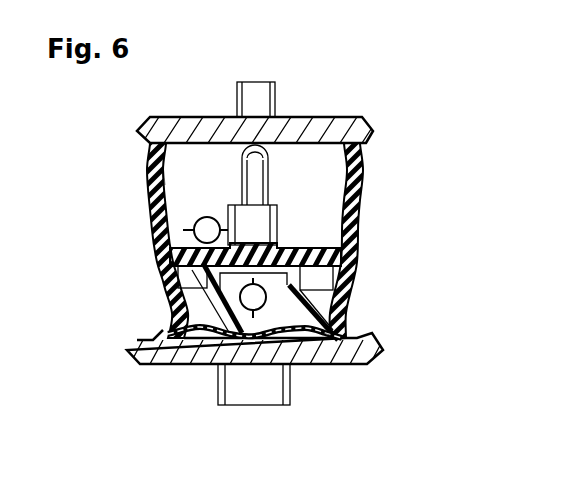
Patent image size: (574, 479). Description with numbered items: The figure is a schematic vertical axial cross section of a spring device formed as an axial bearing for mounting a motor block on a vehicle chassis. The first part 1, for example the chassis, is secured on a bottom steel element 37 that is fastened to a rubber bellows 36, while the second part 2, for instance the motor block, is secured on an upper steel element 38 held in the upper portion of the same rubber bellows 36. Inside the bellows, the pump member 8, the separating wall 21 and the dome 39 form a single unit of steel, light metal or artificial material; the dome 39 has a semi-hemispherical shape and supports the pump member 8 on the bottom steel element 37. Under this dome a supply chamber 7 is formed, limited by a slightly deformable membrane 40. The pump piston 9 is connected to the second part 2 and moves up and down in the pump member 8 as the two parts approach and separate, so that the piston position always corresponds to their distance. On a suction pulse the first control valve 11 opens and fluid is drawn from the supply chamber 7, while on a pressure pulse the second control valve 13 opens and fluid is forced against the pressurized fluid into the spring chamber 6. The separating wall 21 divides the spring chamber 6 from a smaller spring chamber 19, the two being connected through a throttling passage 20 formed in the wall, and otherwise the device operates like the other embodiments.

The first part 1 is at (230, 403).
The second part 2 is at (262, 87).
The spring chamber 6 is at (174, 165).
The supply chamber 7 is at (176, 315).
The pump member 8 is at (258, 228).
The pump piston 9 is at (253, 168).
The first control valve 11 is at (268, 303).
The second control valve 13 is at (213, 217).
The smaller spring chamber 19 is at (173, 285).
The throttling passage 20 is at (347, 246).
The separating wall 21 is at (170, 252).
The rubber bellows 36 is at (360, 159).
The bottom steel element 37 is at (179, 362).
The upper steel element 38 is at (199, 122).
The dome 39 is at (345, 297).
The membrane 40 is at (303, 330).